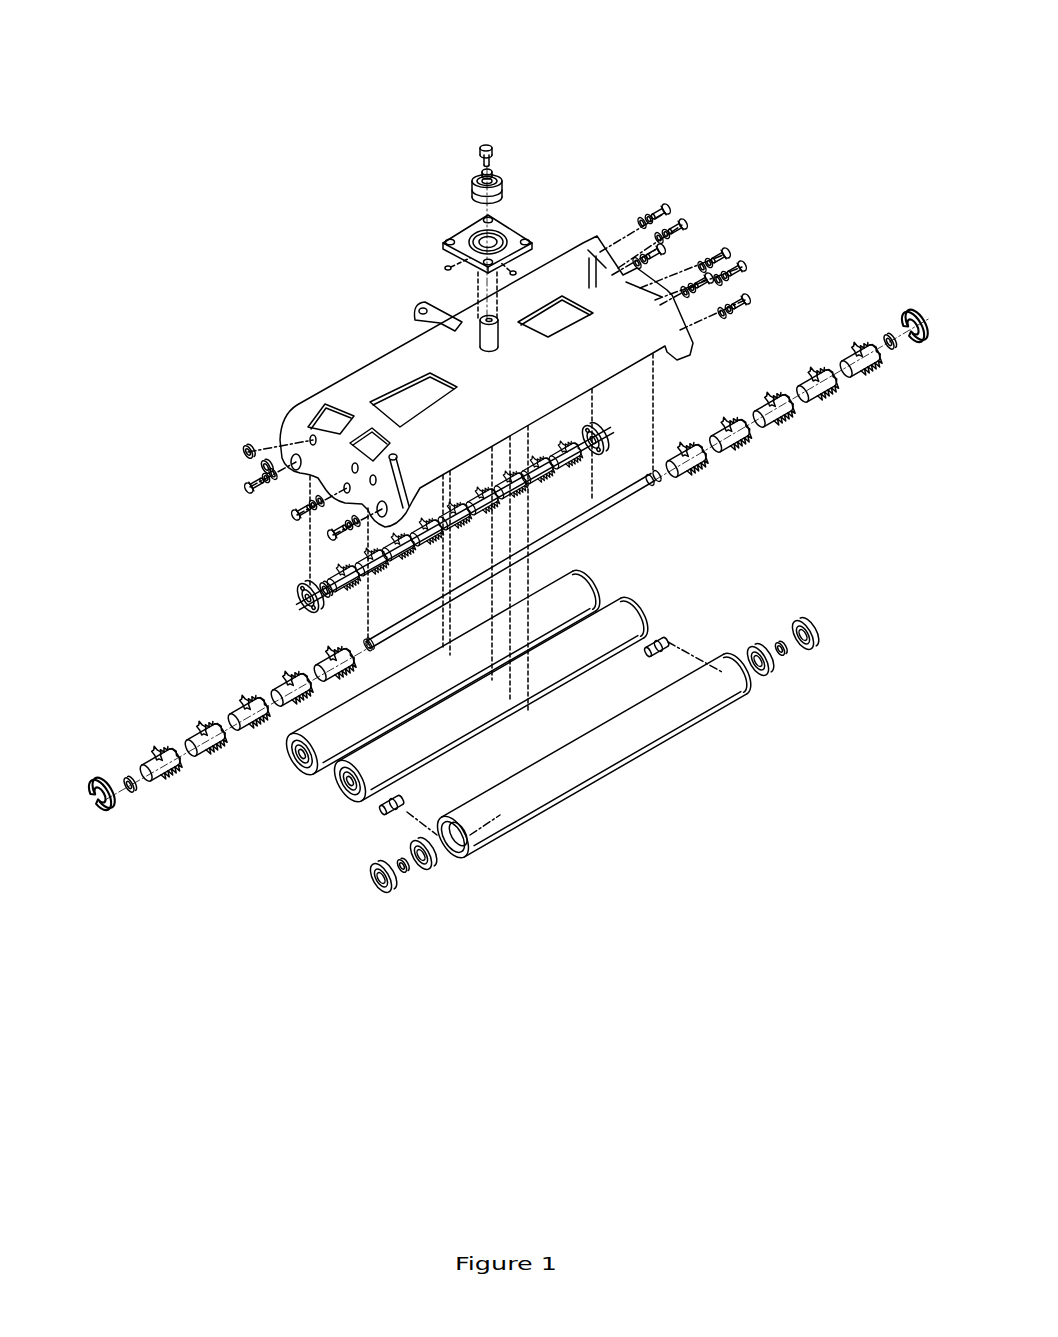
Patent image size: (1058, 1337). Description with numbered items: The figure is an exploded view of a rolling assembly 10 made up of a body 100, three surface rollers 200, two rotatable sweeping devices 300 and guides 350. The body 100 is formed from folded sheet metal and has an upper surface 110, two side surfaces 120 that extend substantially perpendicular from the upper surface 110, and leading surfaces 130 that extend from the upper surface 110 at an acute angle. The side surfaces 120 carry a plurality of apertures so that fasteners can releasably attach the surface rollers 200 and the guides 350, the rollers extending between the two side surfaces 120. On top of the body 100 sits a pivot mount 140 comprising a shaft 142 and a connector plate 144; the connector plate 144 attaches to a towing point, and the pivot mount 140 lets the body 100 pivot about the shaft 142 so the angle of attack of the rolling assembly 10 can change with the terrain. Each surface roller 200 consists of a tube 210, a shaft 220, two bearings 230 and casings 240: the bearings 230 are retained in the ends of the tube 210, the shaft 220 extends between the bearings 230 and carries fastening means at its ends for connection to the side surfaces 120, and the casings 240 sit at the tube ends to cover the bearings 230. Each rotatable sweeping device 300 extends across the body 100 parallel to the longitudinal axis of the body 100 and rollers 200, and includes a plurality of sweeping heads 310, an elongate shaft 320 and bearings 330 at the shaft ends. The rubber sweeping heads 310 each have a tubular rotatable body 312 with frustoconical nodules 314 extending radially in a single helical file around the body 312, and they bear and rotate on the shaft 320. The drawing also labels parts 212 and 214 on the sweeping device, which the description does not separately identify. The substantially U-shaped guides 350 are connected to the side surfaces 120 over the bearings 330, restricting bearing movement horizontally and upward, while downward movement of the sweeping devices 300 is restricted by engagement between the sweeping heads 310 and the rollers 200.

The rolling assembly 10 is at (776, 67).
The body 100 is at (232, 280).
The upper surface 110 is at (355, 392).
The side surfaces 120 is at (587, 242).
The leading surfaces 130 is at (466, 440).
The pivot mount 140 is at (522, 202).
The shaft 142 is at (489, 343).
The connector plate 144 is at (458, 232).
The surface rollers 200 is at (287, 825).
The tube 210 is at (595, 750).
The shaft 212 is at (330, 587).
The brush 214 is at (377, 582).
The shaft 220 is at (655, 643).
The bearings 230 is at (430, 857).
The casings 240 is at (397, 887).
The rotatable sweeping devices 300 is at (148, 512).
The sweeping heads 310 is at (223, 548).
The rotatable body 312 is at (858, 358).
The nodules 314 is at (868, 375).
The shaft 320 is at (582, 520).
The bearings 330 is at (890, 353).
The guides 350 is at (597, 440).